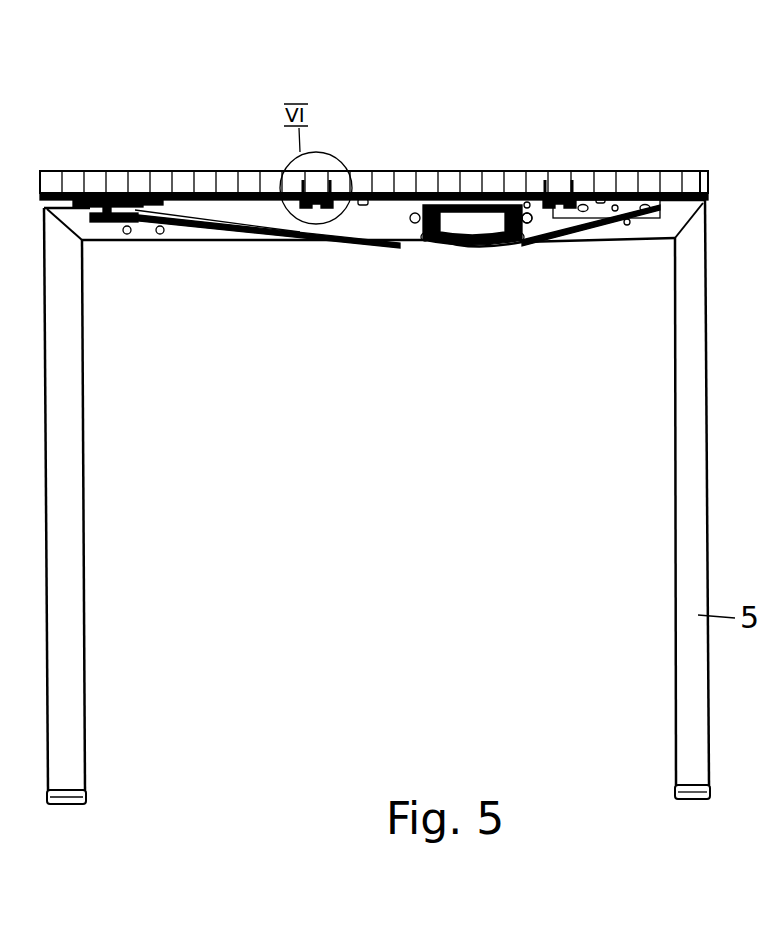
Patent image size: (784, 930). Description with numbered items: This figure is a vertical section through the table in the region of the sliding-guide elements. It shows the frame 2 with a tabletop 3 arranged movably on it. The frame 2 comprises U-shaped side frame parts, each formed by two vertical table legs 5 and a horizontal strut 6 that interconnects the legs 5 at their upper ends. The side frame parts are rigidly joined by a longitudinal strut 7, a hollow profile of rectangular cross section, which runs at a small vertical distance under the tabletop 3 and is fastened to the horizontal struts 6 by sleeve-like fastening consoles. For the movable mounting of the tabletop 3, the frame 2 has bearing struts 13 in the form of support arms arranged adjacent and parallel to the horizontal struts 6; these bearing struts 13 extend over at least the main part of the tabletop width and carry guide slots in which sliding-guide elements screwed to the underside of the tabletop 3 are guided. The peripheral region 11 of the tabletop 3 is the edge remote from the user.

The frame 2 is at (144, 250).
The tabletop 3 is at (205, 172).
The vertical table legs 5 is at (70, 648).
The horizontal strut 6 is at (638, 238).
The longitudinal strut 7 is at (463, 235).
The peripheral region of the tabletop 11 is at (704, 180).
The bearing struts 13 is at (355, 232).